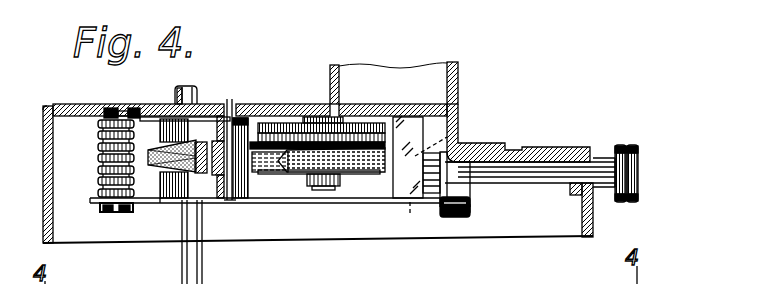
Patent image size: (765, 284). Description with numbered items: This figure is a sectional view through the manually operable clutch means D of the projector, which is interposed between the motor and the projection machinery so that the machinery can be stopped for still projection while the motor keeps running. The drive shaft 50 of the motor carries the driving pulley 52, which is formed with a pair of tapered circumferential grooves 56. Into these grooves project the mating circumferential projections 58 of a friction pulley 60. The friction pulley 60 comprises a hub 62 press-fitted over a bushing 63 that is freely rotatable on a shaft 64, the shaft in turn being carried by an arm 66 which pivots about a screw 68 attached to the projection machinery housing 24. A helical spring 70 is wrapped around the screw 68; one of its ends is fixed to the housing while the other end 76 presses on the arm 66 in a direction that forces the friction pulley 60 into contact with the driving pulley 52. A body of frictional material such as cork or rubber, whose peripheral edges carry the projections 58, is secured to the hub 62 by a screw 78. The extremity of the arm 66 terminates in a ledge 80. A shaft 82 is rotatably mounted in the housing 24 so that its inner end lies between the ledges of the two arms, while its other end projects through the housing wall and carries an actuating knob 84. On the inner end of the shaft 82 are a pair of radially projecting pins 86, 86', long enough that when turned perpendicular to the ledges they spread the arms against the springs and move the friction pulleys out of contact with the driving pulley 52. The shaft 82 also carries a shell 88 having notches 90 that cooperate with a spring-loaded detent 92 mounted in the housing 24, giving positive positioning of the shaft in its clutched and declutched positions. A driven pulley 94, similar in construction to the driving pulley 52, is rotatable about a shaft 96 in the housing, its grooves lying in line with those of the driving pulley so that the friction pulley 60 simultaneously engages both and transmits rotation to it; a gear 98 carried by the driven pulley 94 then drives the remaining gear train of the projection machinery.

The projection machinery housing 24 is at (48, 205).
The drive shaft 50 is at (185, 94).
The driving pulley 52 is at (157, 150).
The tapered circumferential grooves 56 is at (380, 158).
The circumferential projections 58 is at (163, 170).
The friction pulley 60 is at (257, 194).
The hub 62 is at (218, 199).
The bushing 63 is at (232, 184).
The shaft 64 is at (228, 103).
The arm 66 is at (317, 204).
The screw 68 is at (107, 166).
The helical spring 70 is at (152, 168).
The spring end 76 is at (160, 204).
The screw 78 is at (202, 143).
The ledge 80 is at (413, 119).
The shaft 82 is at (533, 183).
The actuating knob 84 is at (637, 175).
The radially projecting pin 86 is at (520, 170).
The radially projecting pin 86' is at (423, 184).
The shell 88 is at (452, 218).
The notch 90 is at (464, 208).
The spring-loaded detent 92 is at (463, 192).
The driven pulley 94 is at (374, 172).
The shaft 96 is at (338, 188).
The gear 98 is at (319, 155).
The clutch means D is at (240, 96).